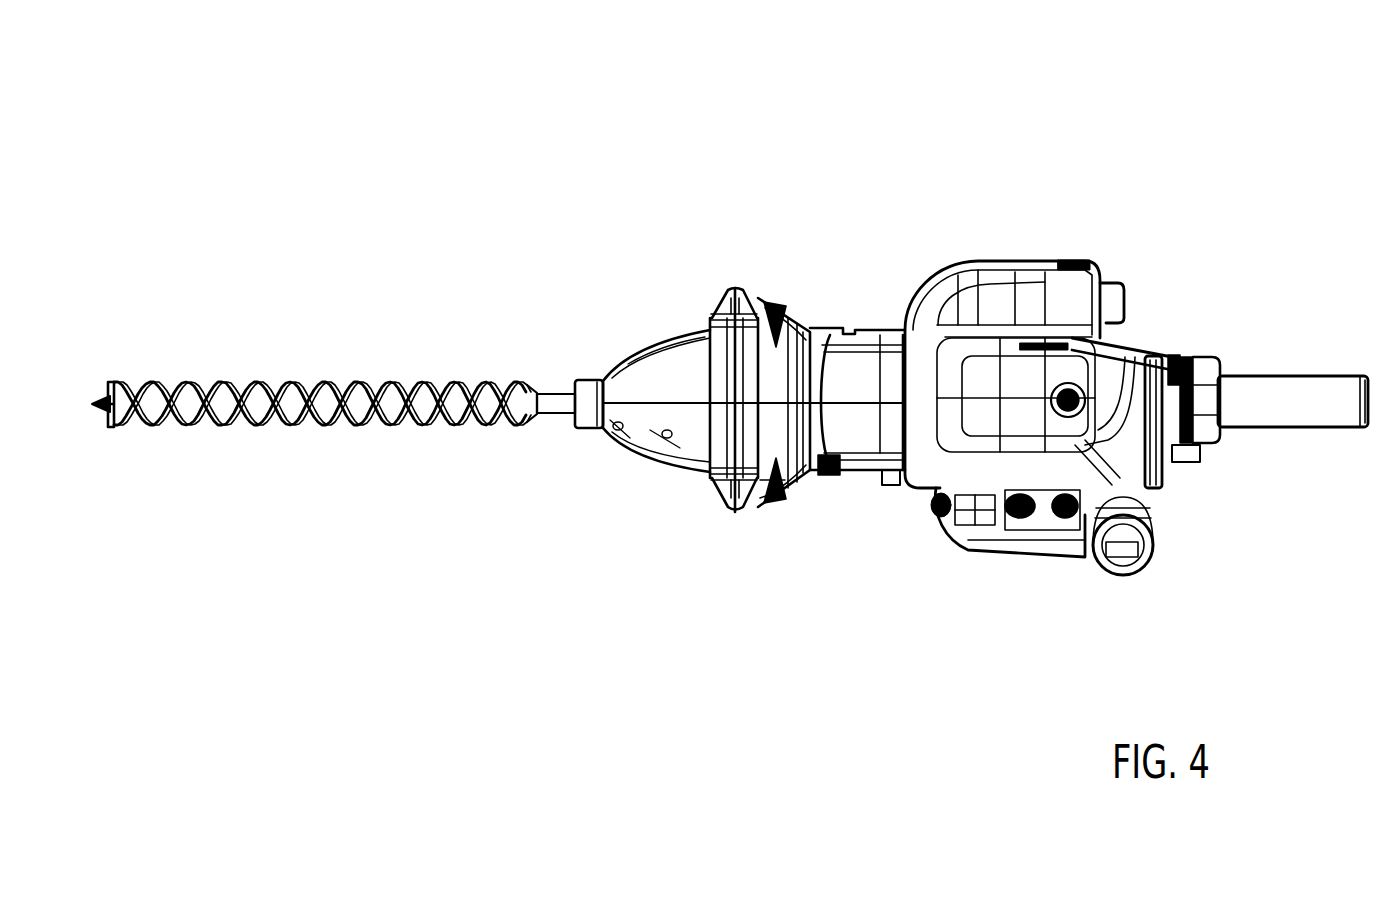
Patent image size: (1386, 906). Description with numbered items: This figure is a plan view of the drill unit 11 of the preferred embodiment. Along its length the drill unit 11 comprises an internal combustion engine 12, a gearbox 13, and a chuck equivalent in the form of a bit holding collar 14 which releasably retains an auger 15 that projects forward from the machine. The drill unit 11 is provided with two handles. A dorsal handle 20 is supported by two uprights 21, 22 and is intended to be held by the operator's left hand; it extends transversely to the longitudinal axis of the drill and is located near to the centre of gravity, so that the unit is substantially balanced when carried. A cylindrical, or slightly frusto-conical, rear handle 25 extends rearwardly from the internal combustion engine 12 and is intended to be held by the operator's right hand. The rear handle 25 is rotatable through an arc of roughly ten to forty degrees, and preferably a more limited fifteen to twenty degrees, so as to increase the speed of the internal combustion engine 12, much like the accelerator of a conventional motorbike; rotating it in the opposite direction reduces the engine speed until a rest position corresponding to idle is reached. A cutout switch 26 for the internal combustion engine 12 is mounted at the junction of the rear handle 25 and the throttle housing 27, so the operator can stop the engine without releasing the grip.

The drill unit 11 is at (974, 128).
The internal combustion engine 12 is at (932, 352).
The gearbox 13 is at (637, 380).
The bit holding collar 14 is at (585, 410).
The auger 15 is at (261, 375).
The dorsal handle 20 is at (712, 335).
The upright 21 is at (772, 496).
The upright 22 is at (770, 312).
The rear handle 25 is at (1290, 418).
The cutout switch 26 is at (1218, 392).
The throttle housing 27 is at (1172, 352).